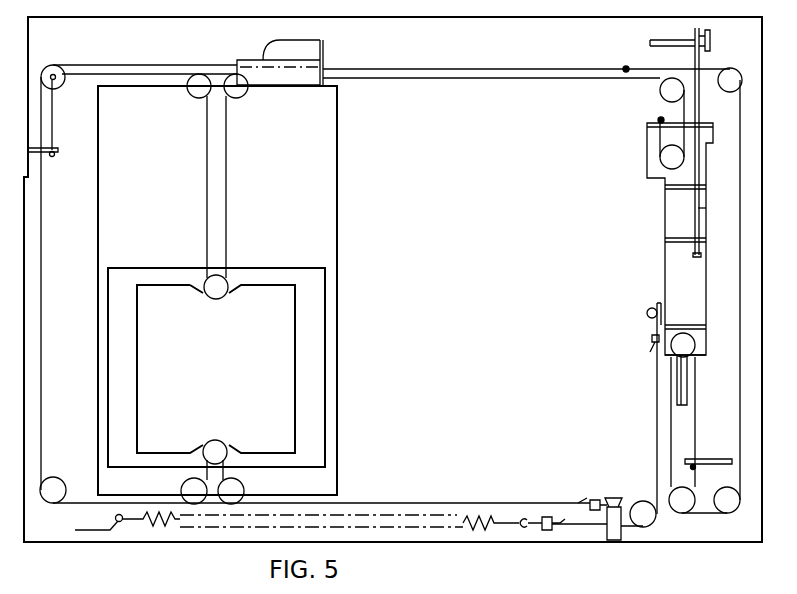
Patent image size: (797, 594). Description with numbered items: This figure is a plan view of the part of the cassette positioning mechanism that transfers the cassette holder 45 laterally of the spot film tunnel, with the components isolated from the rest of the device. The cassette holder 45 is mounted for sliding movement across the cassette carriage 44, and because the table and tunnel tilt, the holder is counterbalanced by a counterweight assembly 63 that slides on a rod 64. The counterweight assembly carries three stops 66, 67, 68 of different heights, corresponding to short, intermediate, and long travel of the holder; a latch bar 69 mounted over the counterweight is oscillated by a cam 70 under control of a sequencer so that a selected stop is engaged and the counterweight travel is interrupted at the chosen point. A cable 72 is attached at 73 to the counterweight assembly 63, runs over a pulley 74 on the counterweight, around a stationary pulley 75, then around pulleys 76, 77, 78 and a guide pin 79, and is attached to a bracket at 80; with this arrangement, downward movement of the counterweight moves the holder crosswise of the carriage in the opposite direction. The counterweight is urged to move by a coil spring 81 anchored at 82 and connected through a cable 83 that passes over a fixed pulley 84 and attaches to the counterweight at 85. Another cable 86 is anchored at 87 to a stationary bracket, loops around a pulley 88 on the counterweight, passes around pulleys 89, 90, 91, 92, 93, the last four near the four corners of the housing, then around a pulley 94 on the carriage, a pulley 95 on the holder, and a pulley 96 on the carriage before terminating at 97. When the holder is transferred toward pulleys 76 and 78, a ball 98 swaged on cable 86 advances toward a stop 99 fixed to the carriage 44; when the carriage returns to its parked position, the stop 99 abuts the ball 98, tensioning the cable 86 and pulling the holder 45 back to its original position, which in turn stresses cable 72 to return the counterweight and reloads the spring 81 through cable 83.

The cassette carriage 44 is at (338, 190).
The cassette holder 45 is at (327, 355).
The counterweight assembly 63 is at (673, 282).
The rod 64 is at (677, 388).
The stop 66 is at (706, 241).
The stop 67 is at (706, 189).
The stop 68 is at (711, 126).
The latch bar 69 is at (707, 208).
The cam 70 is at (710, 40).
The cable 72 is at (228, 176).
The cable attachment point 73 is at (659, 119).
The pulley 74 is at (660, 157).
The stationary pulley 75 is at (659, 88).
The pulley 76 is at (248, 92).
The pulley 77 is at (226, 297).
The pulley 78 is at (191, 97).
The guide pin 79 is at (57, 87).
The bracket attachment point 80 is at (58, 152).
The coil spring 81 is at (479, 531).
The spring attachment point 82 is at (117, 533).
The cable 83 is at (582, 530).
The fixed pulley 84 is at (654, 510).
The cable attachment point 85 is at (652, 322).
The cable 86 is at (490, 68).
The cable attachment point 87 is at (696, 458).
The pulley 88 is at (695, 345).
The pulley 89 is at (690, 514).
The pulley 90 is at (738, 512).
The pulley 91 is at (734, 72).
The pulley 92 is at (52, 65).
The pulley 93 is at (62, 480).
The pulley 94 is at (186, 470).
The pulley 95 is at (215, 440).
The pulley 96 is at (244, 491).
The cable termination 97 is at (612, 498).
The ball 98 is at (626, 66).
The stop 99 is at (323, 68).